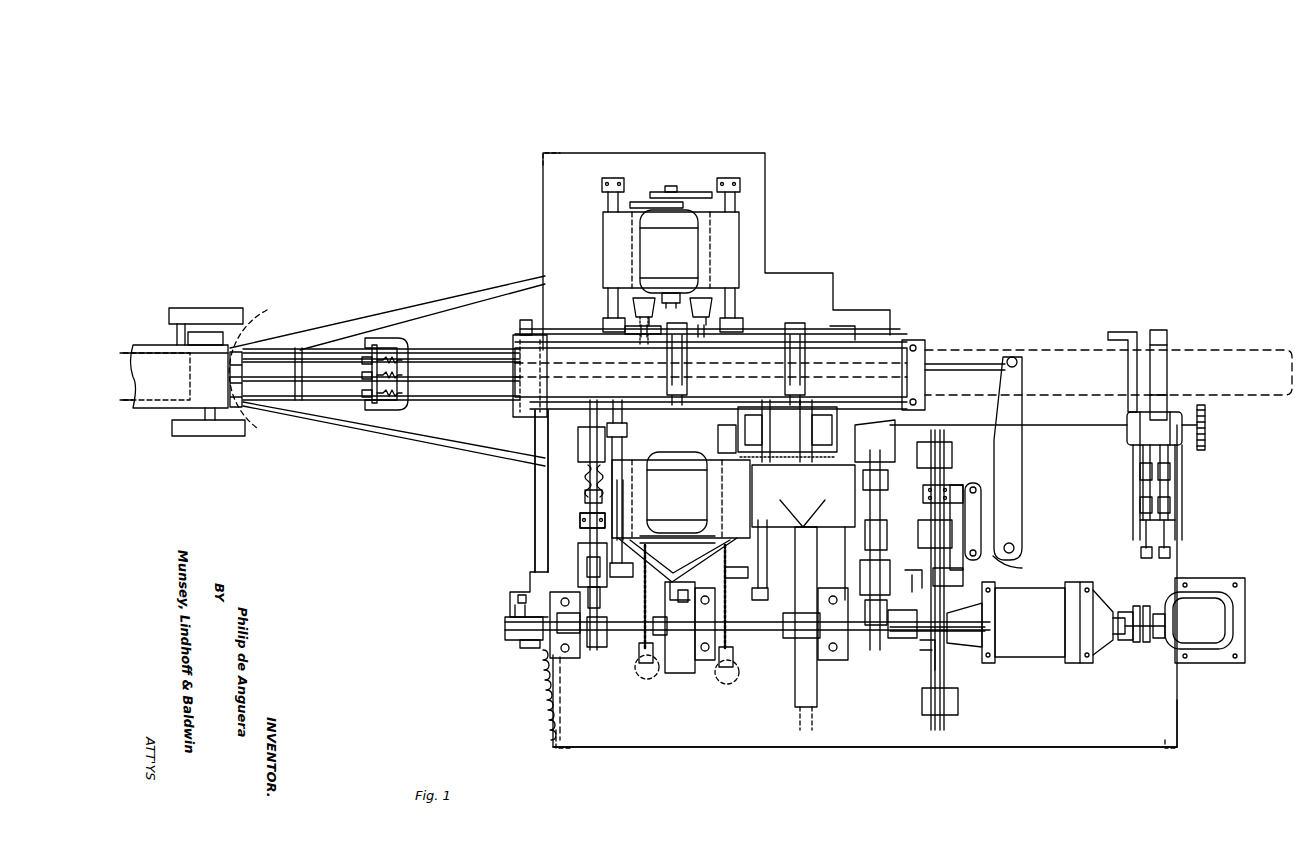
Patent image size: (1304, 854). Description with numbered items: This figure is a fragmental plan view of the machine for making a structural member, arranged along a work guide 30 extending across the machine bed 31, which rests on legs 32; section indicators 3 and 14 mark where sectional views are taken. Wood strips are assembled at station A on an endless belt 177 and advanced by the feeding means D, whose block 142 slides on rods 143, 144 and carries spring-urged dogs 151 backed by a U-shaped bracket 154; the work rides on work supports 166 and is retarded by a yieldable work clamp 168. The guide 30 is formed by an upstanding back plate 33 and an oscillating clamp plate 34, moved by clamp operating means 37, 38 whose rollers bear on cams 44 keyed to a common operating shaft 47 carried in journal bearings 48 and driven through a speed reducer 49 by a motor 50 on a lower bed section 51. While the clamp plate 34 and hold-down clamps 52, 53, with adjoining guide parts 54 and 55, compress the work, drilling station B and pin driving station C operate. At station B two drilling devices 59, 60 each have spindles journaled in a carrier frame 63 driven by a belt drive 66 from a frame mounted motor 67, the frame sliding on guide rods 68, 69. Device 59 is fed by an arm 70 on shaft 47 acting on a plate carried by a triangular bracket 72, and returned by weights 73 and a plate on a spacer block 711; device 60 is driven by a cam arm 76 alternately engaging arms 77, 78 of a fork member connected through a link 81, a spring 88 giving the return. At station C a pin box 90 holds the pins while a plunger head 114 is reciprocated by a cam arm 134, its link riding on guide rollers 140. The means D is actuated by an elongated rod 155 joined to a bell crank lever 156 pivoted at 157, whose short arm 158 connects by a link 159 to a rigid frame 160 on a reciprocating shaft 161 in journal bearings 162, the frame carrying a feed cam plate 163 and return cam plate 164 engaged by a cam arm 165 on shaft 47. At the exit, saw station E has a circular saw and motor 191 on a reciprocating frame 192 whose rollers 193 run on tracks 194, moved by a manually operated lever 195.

The section line 3- 3 is at (669, 178).
The section line 14- 14 is at (910, 417).
The work guide 30 is at (830, 340).
The machine bed 31 is at (625, 745).
The legs 32 is at (543, 155).
The back plate 33 is at (770, 330).
The clamp plate 34 is at (757, 402).
The work clamp operating means 37 is at (575, 532).
The work clamp operating means 38 is at (865, 610).
The cam 44 is at (596, 652).
The operating shaft 47 is at (768, 632).
The journal bearings 48 is at (568, 662).
The speed reducer 49 is at (1072, 582).
The motor 50 is at (1210, 590).
The machine bed section 51 is at (1102, 738).
The clamp 52 is at (690, 375).
The hold-down clamps 53 is at (805, 375).
The bracket 54 is at (735, 330).
The support 55 is at (820, 325).
The drilling device 59 is at (625, 470).
The drilling device 60 is at (640, 318).
The carrier frame 63 is at (735, 240).
The belt drive 66 is at (690, 190).
The frame mounted motor 67 is at (673, 371).
The guide rod 68 is at (603, 198).
The guide rod 69 is at (735, 210).
The arm 70 is at (650, 662).
The triangularly-shaped bracket 72 is at (648, 562).
The weights 73 is at (730, 682).
The cam arm 76 is at (505, 625).
The upstanding arm 77 is at (522, 588).
The upstanding arm 78 is at (522, 648).
The link 81 is at (535, 508).
The spring 88 is at (545, 680).
The pin box 90 is at (777, 431).
The plunger head 114 is at (803, 532).
The cam arm 134 is at (798, 640).
The guide rollers 140 is at (228, 372).
The block 142 is at (525, 408).
The lower brace 143 is at (442, 405).
The upper brace 144 is at (455, 325).
The work-engaging dogs 151 is at (372, 400).
The U-shaped bracket 154 is at (390, 338).
The elongated rod 155 is at (968, 360).
The bell crank lever 156 is at (1015, 360).
The pivot 157 is at (1014, 545).
The short arm 158 is at (1023, 565).
The link 159 is at (980, 512).
The rigid frame 160 is at (960, 495).
The transversely reciprocating shaft 161 is at (945, 680).
The journal bearings 162 is at (945, 462).
The feed cam plate 163 is at (920, 575).
The return cam plate 164 is at (940, 645).
The cam arm 165 is at (915, 645).
The work supports 166 is at (1158, 330).
The yieldable work clamp 168 is at (905, 338).
The endless belt 177 is at (160, 408).
The circular saw and motor 191 is at (1192, 440).
The transversely reciprocating frame 192 is at (1182, 490).
The rollers 193 is at (1140, 470).
The tracks 194 is at (1143, 555).
The manually operated lever 195 is at (1118, 332).
The spacer block 711 is at (690, 597).
The wood strip assembling station A is at (150, 322).
The drilling station B is at (722, 290).
The pin driving station C is at (822, 330).
The work advancing means D is at (405, 336).
The cutting station E is at (1180, 368).